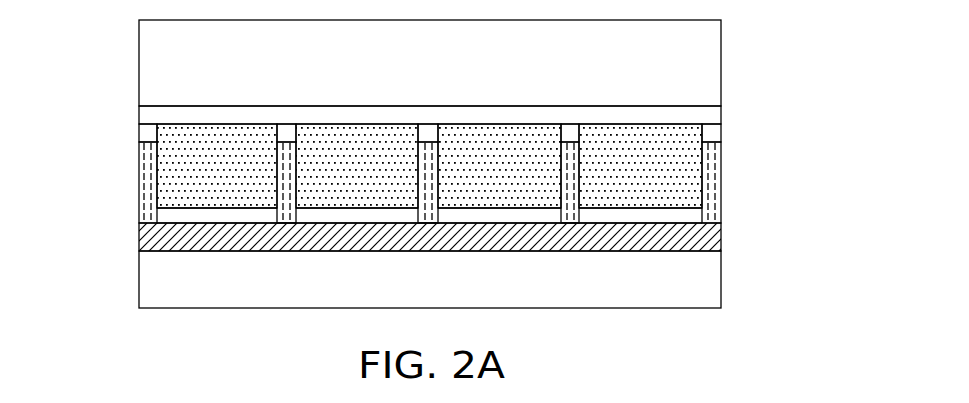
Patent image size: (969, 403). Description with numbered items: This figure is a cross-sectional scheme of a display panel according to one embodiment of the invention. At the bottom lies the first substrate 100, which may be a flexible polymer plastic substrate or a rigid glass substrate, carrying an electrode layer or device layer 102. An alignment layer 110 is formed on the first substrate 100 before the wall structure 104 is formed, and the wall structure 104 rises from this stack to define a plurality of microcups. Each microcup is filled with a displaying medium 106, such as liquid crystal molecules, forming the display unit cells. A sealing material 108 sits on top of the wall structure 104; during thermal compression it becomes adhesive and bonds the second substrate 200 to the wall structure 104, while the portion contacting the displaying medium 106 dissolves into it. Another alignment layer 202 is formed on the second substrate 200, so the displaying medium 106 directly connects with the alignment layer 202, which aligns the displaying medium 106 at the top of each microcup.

The first substrate 100 is at (690, 282).
The device layer 102 is at (690, 238).
The wall structure 104 is at (712, 172).
The displaying medium 106 is at (190, 182).
The sealing material 108 is at (150, 133).
The alignment layer 110 is at (673, 213).
The second substrate 200 is at (687, 66).
The alignment layer 202 is at (710, 113).